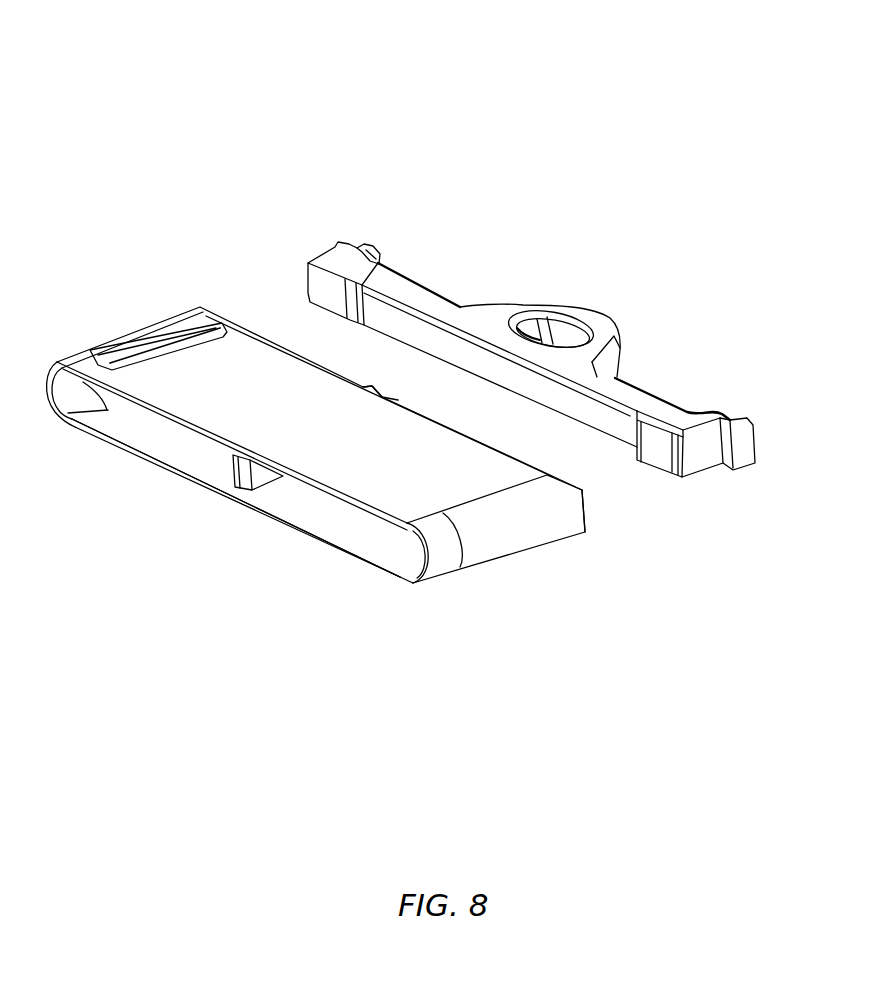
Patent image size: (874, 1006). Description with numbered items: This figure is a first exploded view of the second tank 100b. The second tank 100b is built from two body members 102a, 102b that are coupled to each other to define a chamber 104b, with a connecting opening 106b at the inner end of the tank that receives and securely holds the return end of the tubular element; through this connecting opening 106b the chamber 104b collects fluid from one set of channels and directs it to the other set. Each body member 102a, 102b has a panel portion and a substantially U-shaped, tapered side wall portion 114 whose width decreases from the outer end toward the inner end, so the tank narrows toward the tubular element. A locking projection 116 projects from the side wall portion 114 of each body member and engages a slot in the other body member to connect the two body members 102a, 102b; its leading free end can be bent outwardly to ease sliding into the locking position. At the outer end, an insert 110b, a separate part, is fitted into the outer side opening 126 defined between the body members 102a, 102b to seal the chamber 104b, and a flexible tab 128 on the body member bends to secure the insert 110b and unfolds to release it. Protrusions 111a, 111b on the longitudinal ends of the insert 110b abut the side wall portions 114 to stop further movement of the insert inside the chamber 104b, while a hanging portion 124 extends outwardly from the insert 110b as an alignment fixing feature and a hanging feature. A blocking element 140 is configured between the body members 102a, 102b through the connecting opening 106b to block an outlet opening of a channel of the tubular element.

The second tank 100b is at (661, 142).
The body member 102a is at (232, 373).
The body member 102b is at (310, 523).
The chamber 104b is at (200, 453).
The connecting opening 106b is at (110, 428).
The insert 110b is at (653, 390).
The protrusion 111a is at (372, 245).
The protrusion 111b is at (735, 414).
The side wall portion 114 is at (492, 548).
The locking projection 116 is at (153, 338).
The hanging portion 124 is at (598, 317).
The outer side opening 126 is at (582, 500).
The flexible tab 128 is at (405, 403).
The blocking element 140 is at (243, 468).